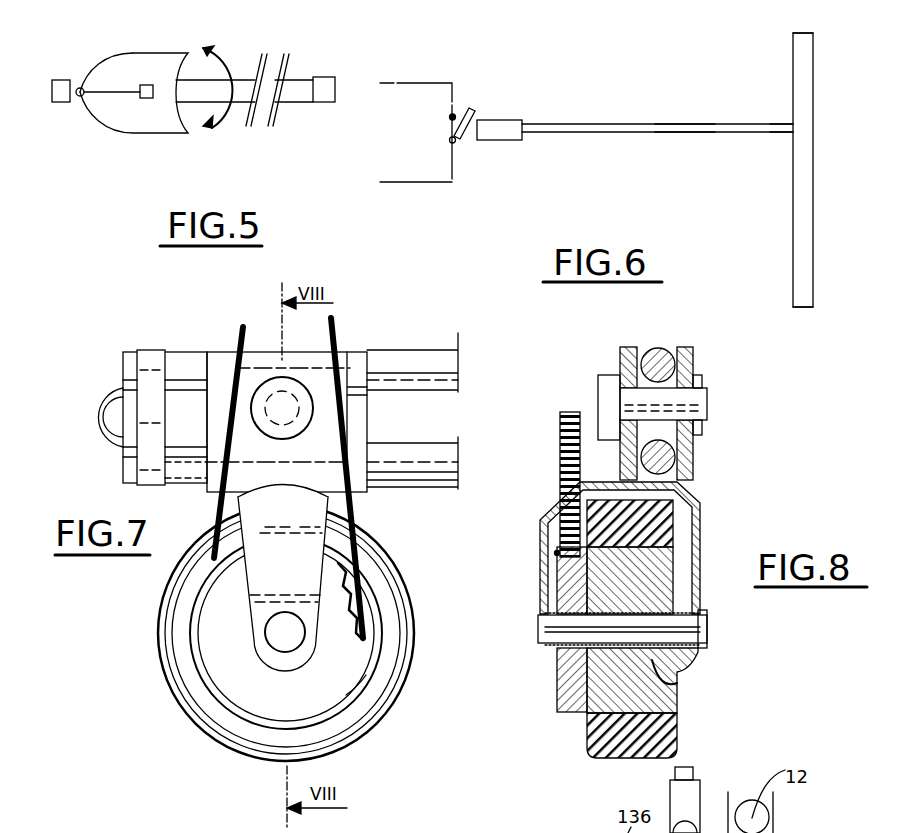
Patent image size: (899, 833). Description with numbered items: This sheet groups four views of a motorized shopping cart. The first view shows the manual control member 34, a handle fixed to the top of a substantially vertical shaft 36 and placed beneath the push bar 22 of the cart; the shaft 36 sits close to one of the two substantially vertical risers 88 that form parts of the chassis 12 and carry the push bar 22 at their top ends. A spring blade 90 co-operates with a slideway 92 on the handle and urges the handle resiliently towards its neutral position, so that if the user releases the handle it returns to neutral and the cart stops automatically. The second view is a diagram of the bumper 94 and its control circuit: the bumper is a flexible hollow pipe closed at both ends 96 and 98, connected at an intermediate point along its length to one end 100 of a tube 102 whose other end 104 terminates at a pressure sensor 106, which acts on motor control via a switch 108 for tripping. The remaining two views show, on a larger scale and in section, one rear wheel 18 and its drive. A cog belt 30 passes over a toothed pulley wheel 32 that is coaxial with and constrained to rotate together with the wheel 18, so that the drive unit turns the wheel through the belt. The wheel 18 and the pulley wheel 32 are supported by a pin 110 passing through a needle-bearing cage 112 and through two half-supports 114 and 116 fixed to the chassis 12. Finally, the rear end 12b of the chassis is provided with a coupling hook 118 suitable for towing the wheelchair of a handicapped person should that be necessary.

In FIG. 7, the chassis 12 is at (427, 360).
In FIG. 8, the chassis 12 is at (667, 350).
In FIG. 7, the rear portion of the chassis 12b is at (153, 363).
In FIG. 7, the rear wheel 18 is at (180, 707).
In FIG. 8, the rear wheel 18 is at (677, 730).
In FIG. 5, the push bar 22 is at (237, 83).
In FIG. 7, the cog belt 30 is at (360, 507).
In FIG. 8, the cog belt 30 is at (560, 443).
In FIG. 7, the toothed pulley wheel 32 is at (213, 632).
In FIG. 8, the toothed pulley wheel 32 is at (567, 683).
In FIG. 5, the control handle 34 is at (152, 135).
In FIG. 5, the shaft 36 is at (80, 100).
In FIG. 5, the riser 88 is at (55, 103).
In FIG. 5, the spring blade 90 is at (99, 105).
In FIG. 5, the slideway 92 is at (148, 85).
In FIG. 6, the bumper 94 is at (813, 170).
In FIG. 6, the bumper end 96 is at (803, 33).
In FIG. 6, the bumper end 98 is at (800, 308).
In FIG. 6, the tube end 100 is at (792, 134).
In FIG. 6, the tube 102 is at (686, 133).
In FIG. 6, the tube end 104 is at (533, 134).
In FIG. 6, the pressure sensor 106 is at (500, 141).
In FIG. 6, the switch 108 is at (477, 110).
In FIG. 7, the pin 110 is at (283, 636).
In FIG. 8, the pin 110 is at (707, 632).
In FIG. 8, the needle-bearing cage 112 is at (677, 685).
In FIG. 7, the half-support 114 is at (310, 573).
In FIG. 8, the half-support 114 is at (557, 553).
In FIG. 8, the half-support 116 is at (697, 543).
In FIG. 7, the coupling hook 118 is at (101, 398).